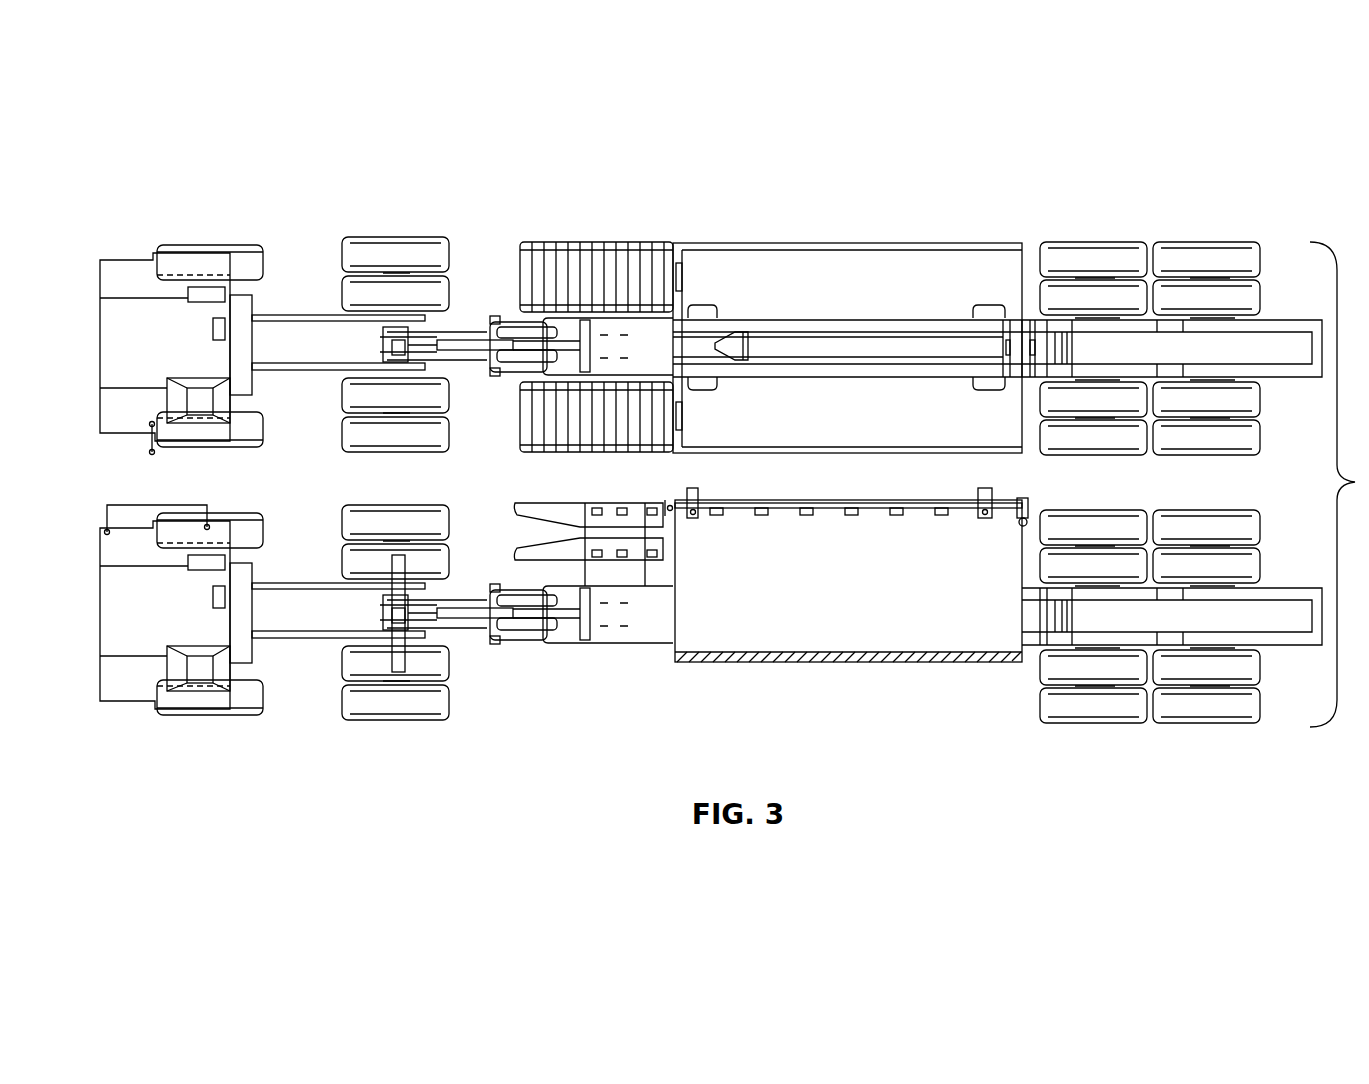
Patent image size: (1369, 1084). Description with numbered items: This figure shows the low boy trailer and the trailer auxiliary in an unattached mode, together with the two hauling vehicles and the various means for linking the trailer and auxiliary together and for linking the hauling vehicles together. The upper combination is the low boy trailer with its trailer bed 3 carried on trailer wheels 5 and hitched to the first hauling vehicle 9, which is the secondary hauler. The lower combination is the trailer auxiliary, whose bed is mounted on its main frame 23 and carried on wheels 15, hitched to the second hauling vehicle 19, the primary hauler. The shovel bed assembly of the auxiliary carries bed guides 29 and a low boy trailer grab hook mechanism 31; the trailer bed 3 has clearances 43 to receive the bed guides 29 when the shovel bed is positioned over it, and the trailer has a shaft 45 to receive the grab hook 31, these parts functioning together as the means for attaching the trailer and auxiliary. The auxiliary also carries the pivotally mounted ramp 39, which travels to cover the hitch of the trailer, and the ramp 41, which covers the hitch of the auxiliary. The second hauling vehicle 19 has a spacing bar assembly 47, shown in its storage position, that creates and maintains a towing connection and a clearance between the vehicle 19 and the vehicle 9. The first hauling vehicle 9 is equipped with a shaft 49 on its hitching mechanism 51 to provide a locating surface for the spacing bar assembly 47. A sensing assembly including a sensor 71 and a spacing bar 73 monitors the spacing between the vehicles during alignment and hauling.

The trailer bed 3 is at (855, 243).
The trailer wheels 5 is at (1212, 223).
The first hauling vehicle 9 is at (92, 352).
The wheels 15 is at (1215, 733).
The second hauling vehicle 19 is at (94, 633).
The main frame 23 is at (855, 588).
The bed guides 29 is at (692, 488).
The grab hook mechanism 31 is at (1027, 490).
The ramp 39 is at (515, 512).
The ramp 41 is at (515, 548).
The clearances 43 is at (700, 300).
The shaft 45 is at (1018, 335).
The spacing bar assembly 47 is at (392, 650).
The shaft 49 is at (385, 347).
The hitching mechanism 51 is at (500, 372).
The sensor 71 is at (149, 443).
The spacing bar 73 is at (176, 497).